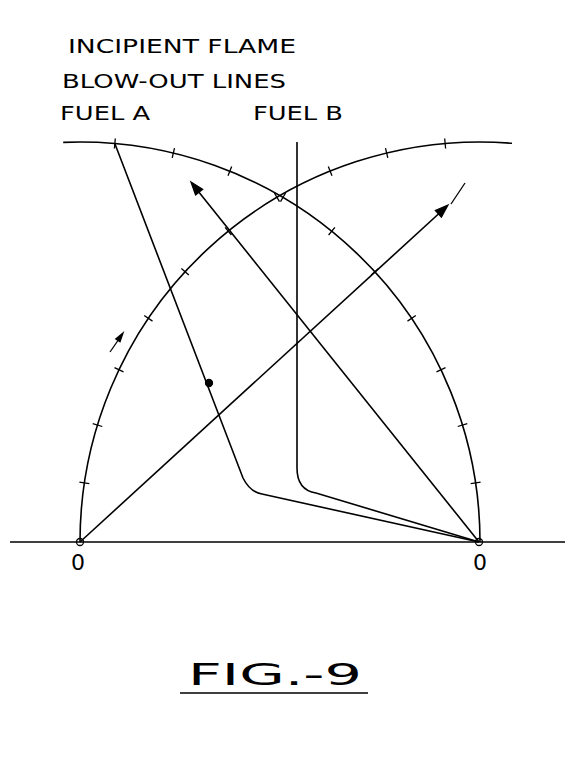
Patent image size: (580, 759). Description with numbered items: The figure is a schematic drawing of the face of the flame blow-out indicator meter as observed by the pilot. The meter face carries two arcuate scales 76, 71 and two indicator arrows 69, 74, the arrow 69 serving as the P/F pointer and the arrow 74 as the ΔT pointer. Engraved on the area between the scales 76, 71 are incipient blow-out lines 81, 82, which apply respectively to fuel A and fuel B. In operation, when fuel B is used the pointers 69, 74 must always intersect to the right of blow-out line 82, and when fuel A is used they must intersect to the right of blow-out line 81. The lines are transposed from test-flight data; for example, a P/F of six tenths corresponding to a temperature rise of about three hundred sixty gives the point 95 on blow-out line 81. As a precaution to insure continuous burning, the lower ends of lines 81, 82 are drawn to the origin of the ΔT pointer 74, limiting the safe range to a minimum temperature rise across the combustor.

The indicator arrow 69 is at (412, 240).
The scale 71 is at (452, 391).
The indicator arrow 74 is at (276, 287).
The scale 76 is at (91, 455).
The incipient blow-out line 81 is at (233, 452).
The incipient blow-out line 82 is at (299, 427).
The point 95 is at (211, 381).